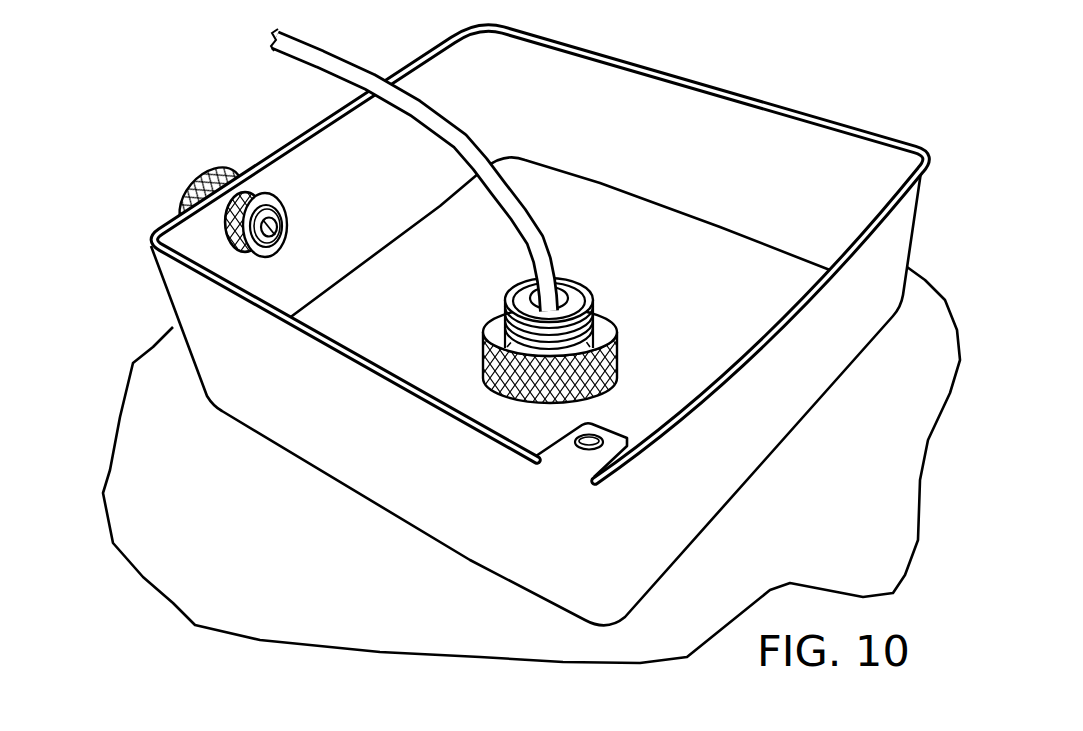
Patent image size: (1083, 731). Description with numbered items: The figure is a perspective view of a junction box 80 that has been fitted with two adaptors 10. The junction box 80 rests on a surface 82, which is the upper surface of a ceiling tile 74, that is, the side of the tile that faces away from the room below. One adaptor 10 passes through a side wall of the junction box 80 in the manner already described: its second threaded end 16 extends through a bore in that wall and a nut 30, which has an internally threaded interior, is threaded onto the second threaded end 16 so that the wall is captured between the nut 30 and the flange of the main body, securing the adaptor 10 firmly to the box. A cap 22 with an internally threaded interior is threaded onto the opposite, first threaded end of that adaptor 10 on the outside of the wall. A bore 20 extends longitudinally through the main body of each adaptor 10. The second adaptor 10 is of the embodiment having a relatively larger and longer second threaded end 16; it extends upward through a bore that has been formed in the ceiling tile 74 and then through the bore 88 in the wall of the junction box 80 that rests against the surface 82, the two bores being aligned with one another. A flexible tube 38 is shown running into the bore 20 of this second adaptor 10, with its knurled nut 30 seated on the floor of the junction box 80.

The adaptor 10 is at (386, 272).
The second threaded end 16 is at (288, 216).
The bore 20 is at (271, 236).
The cap 22 is at (201, 172).
The nut 30 is at (272, 199).
The tube 38 is at (492, 191).
The ceiling tile 74 is at (896, 503).
The junction box 80 is at (271, 424).
The surface 82 is at (337, 585).
The bore 88 is at (620, 378).